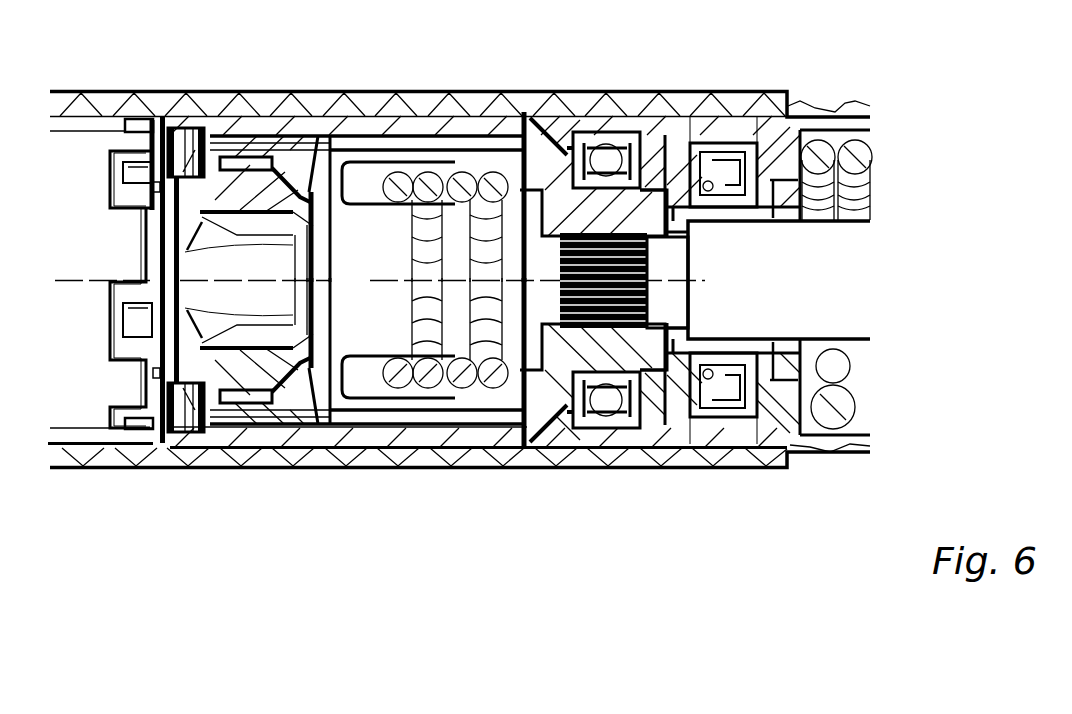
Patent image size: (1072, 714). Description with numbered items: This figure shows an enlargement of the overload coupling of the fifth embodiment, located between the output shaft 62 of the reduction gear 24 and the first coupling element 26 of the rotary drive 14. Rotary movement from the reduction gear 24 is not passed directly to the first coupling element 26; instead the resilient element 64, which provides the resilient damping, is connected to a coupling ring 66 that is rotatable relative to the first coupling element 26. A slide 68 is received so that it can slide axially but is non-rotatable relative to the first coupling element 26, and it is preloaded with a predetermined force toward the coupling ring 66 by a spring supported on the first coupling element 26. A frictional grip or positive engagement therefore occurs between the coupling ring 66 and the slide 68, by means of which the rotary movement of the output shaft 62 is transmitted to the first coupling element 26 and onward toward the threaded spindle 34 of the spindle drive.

The rotary drive 14 is at (55, 88).
The reduction gear 24 is at (92, 412).
The first coupling element 26 is at (430, 133).
The threaded spindle 34 is at (718, 325).
The output shaft 62 is at (232, 415).
The resilient element 64 is at (243, 150).
The coupling ring 66 is at (285, 146).
The slide 68 is at (345, 148).